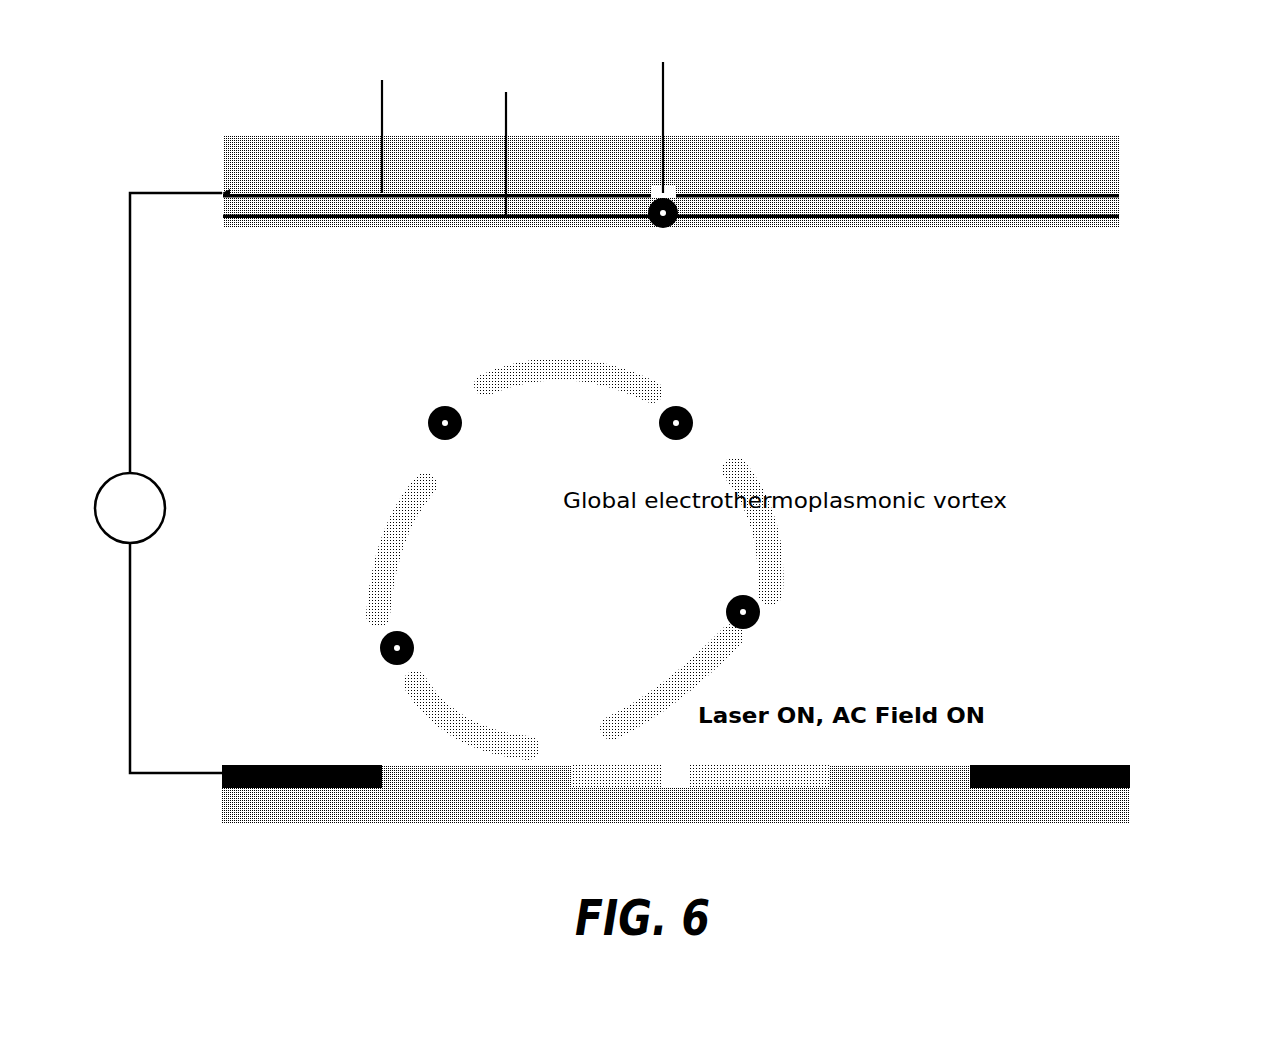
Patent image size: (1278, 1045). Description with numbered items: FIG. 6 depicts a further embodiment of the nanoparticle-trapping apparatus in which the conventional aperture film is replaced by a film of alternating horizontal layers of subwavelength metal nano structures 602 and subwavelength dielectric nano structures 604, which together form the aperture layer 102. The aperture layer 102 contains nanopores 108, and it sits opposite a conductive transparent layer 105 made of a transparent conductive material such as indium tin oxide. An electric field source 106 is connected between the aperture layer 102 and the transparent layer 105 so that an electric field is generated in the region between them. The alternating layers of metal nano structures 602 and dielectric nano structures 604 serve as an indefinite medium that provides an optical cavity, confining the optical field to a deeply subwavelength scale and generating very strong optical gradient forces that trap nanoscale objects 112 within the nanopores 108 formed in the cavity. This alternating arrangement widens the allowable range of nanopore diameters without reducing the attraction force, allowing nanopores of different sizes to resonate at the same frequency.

The aperture layer 102 is at (289, 228).
The subwavelength metal nano structures 602 is at (389, 228).
The subwavelength dielectric nano structures 604 is at (413, 228).
The nanopores 108 is at (628, 138).
The nanoscale objects 112 is at (663, 228).
The electric field source 106 is at (165, 520).
The conductive transparent layer 105 is at (315, 765).